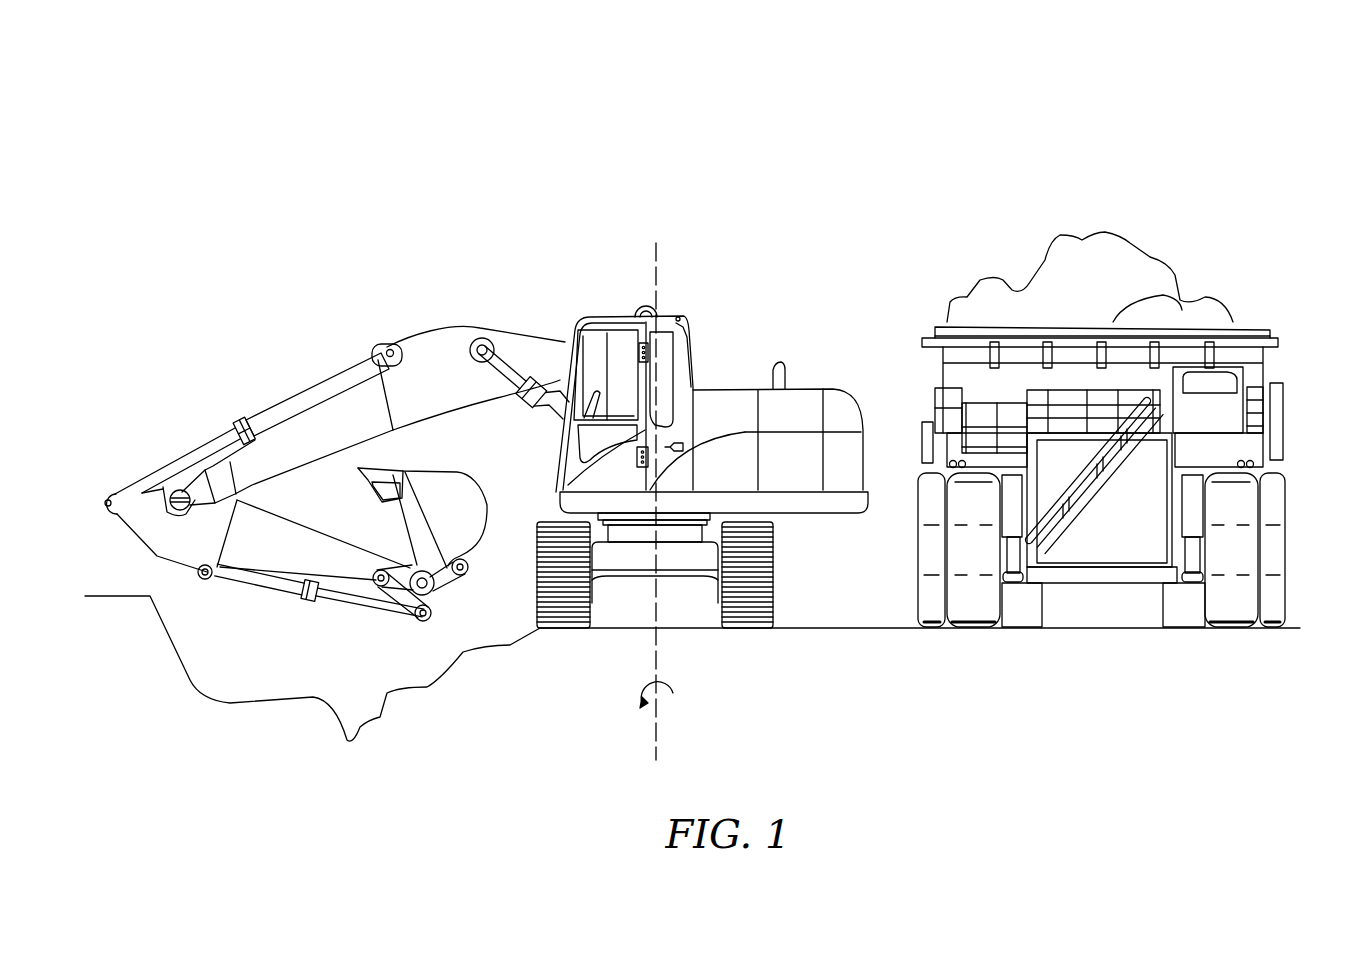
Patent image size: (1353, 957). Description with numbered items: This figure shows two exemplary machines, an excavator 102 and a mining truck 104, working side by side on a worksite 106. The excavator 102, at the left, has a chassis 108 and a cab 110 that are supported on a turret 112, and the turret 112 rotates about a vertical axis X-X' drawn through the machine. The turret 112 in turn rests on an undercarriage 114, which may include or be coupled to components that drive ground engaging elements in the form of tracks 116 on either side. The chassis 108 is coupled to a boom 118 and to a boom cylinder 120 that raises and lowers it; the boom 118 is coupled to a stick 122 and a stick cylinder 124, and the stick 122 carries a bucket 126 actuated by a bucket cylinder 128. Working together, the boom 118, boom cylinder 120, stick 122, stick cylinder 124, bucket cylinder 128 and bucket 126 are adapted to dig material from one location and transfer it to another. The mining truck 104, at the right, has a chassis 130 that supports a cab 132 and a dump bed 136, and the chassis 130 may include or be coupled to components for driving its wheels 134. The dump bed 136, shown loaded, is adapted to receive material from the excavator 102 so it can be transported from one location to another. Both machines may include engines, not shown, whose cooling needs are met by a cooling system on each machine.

The excavator 102 is at (702, 282).
The mining truck 104 is at (1255, 135).
The worksite 106 is at (1000, 120).
The chassis 108 is at (835, 500).
The cab 110 is at (598, 317).
The turret 112 is at (670, 533).
The undercarriage 114 is at (615, 560).
The tracks 116 is at (558, 608).
The boom 118 is at (440, 363).
The boom cylinder 120 is at (507, 360).
The stick 122 is at (248, 545).
The stick cylinder 124 is at (290, 398).
The bucket 126 is at (486, 505).
The bucket cylinder 128 is at (305, 600).
The chassis 130 is at (1100, 575).
The cab 132 is at (1255, 368).
The wheels 134 is at (933, 607).
The dump bed 136 is at (1243, 327).